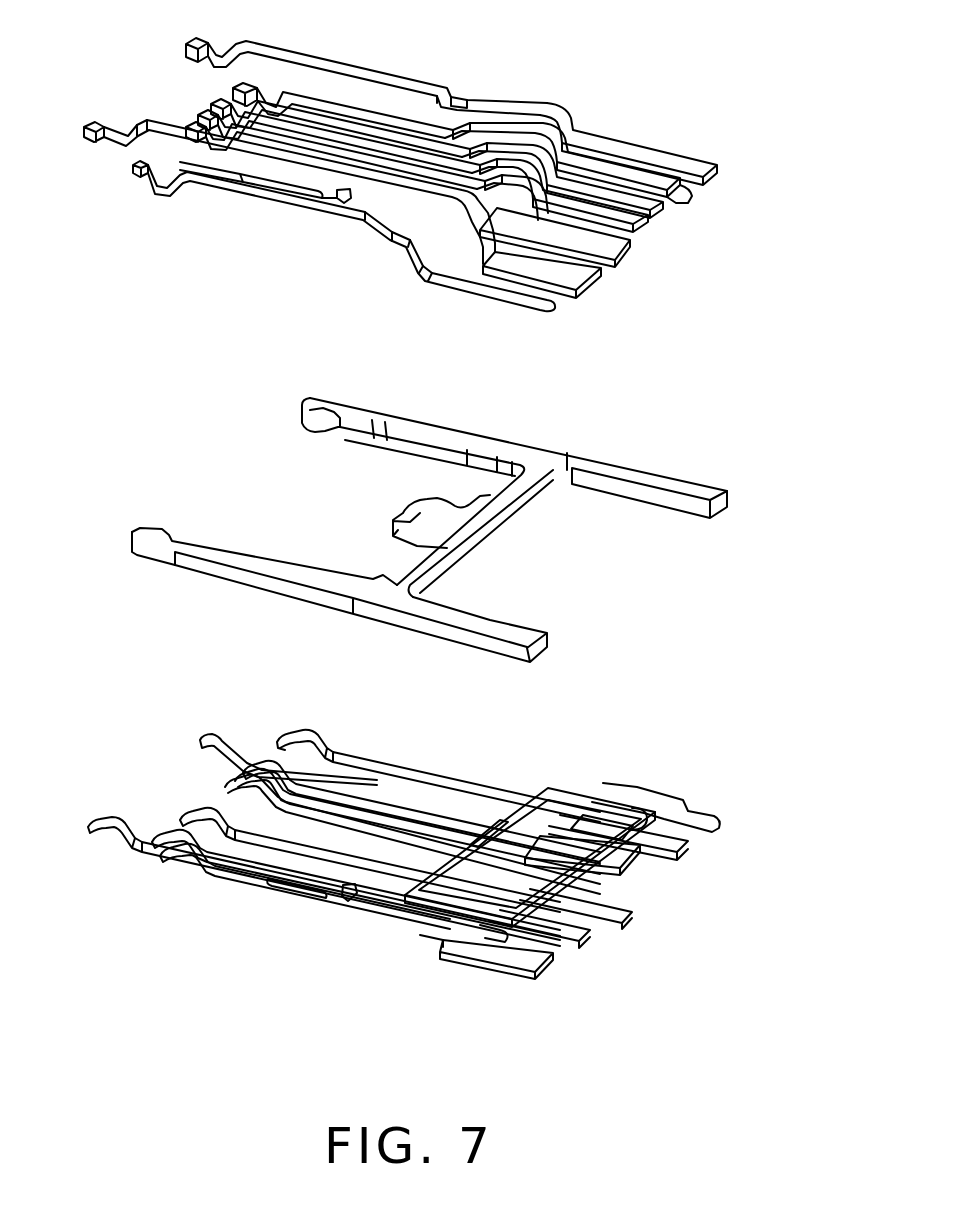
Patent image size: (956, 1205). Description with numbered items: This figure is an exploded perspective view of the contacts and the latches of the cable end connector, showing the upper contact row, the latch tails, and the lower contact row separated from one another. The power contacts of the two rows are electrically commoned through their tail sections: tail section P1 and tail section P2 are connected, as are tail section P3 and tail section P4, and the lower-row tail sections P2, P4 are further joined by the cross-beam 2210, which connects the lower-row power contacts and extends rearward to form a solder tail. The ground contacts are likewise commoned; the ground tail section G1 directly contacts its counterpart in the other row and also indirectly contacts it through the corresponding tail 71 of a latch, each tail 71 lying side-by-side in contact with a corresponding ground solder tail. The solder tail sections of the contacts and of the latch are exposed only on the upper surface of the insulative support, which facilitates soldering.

The tail section P3 is at (693, 195).
The tail section P1 is at (580, 268).
The tail section G1 is at (537, 304).
The tail 71 is at (665, 477).
The cross-beam 2210 is at (556, 868).
The tail section P4 is at (672, 846).
The tail section P2 is at (590, 932).